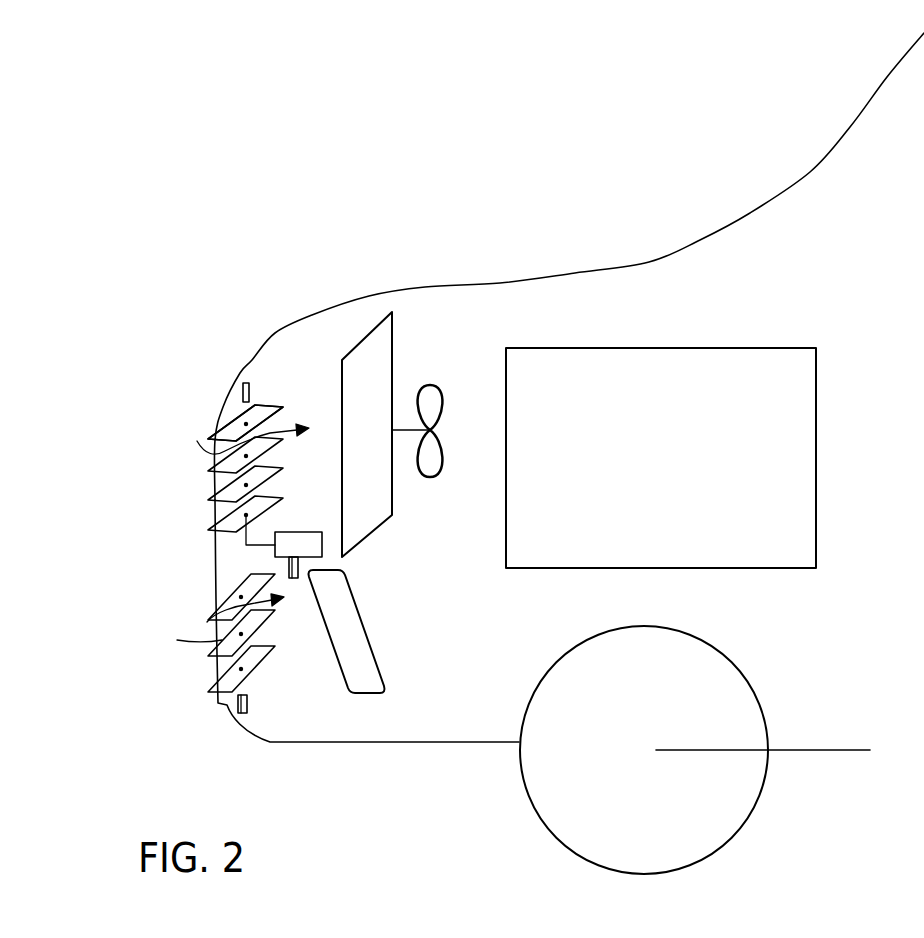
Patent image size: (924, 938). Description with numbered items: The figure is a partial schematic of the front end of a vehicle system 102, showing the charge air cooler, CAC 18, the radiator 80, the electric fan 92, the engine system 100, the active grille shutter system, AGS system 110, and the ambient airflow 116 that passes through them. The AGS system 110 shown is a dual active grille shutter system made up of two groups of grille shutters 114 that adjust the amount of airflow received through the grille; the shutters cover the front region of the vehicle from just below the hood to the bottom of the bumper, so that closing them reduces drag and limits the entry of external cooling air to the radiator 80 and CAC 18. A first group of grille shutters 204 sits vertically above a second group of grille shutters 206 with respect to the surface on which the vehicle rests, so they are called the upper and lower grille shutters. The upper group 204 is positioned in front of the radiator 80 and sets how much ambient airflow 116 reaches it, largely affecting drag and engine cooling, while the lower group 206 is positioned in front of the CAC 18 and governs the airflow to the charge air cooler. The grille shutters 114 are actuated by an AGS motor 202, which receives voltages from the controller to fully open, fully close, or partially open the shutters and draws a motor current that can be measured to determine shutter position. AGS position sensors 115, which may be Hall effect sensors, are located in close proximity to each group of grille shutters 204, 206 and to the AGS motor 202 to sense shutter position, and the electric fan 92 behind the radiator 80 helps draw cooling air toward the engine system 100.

The CAC 18 is at (338, 660).
The radiator 80 is at (369, 533).
The electric fan 92 is at (432, 477).
The engine system 100 is at (506, 349).
The vehicle system 102 is at (811, 172).
The AGS system 110 is at (109, 551).
The grille shutters 114 is at (256, 404).
The AGS position sensor 115 is at (247, 383).
The ambient airflow 116 is at (228, 537).
The AGS motor 202 is at (284, 537).
The first group of grille shutters 204 is at (177, 479).
The second group of grille shutters 206 is at (175, 666).